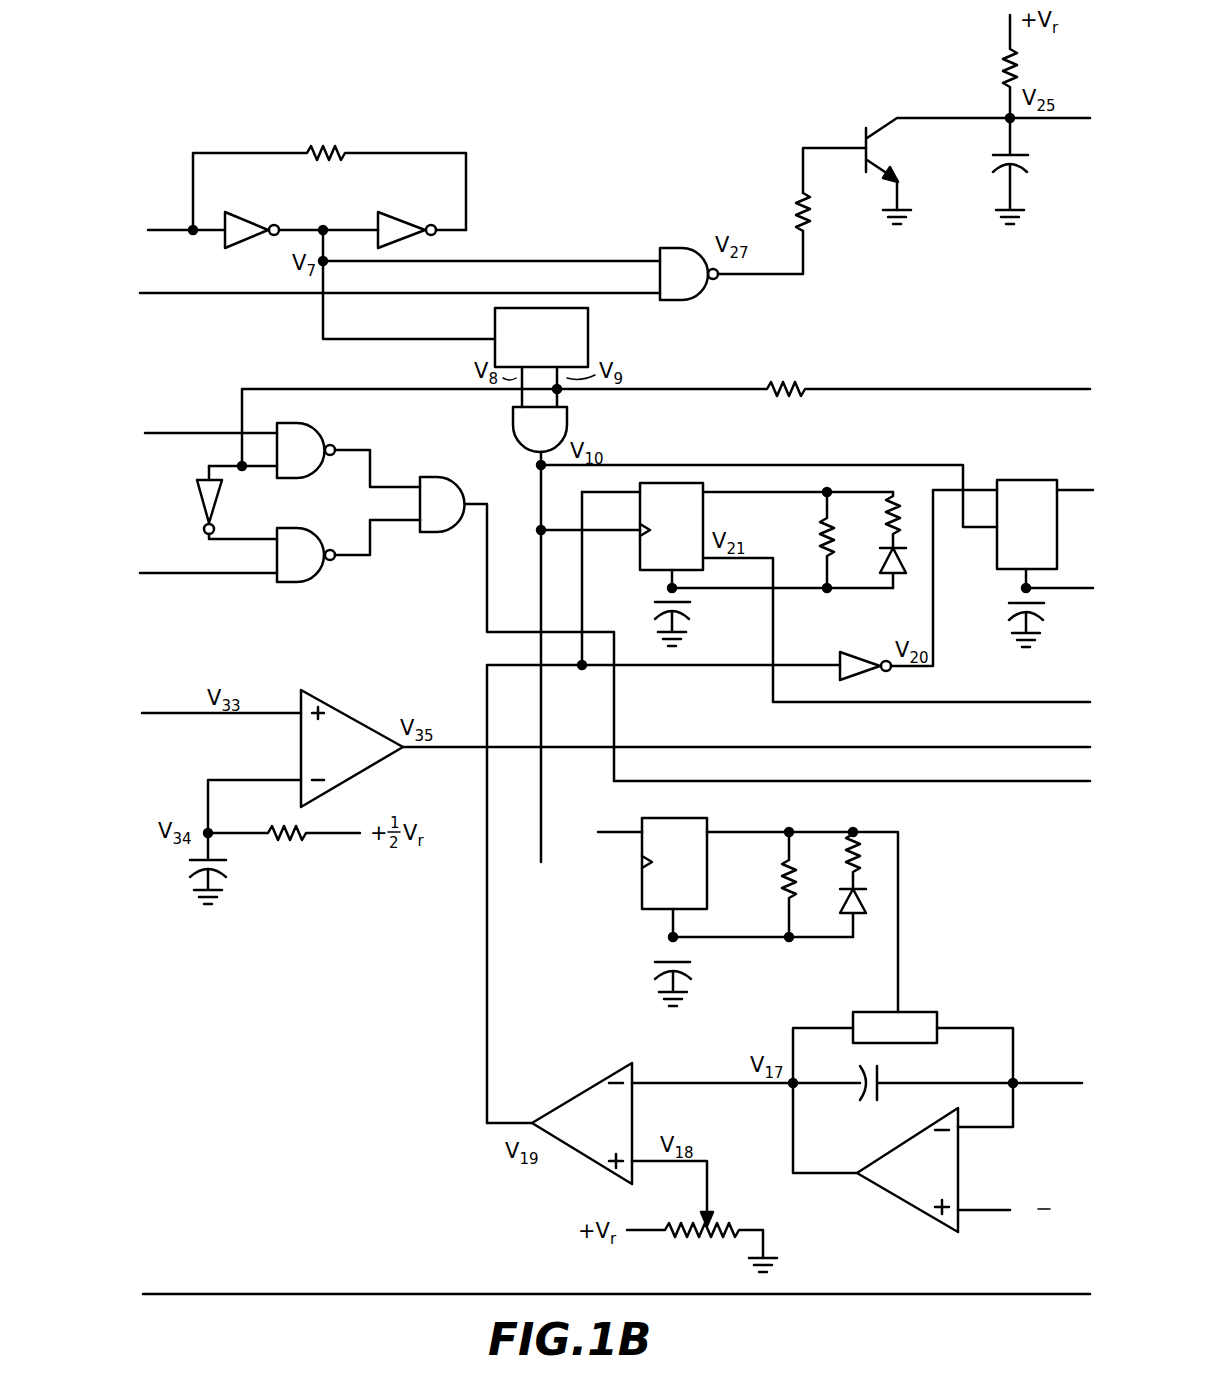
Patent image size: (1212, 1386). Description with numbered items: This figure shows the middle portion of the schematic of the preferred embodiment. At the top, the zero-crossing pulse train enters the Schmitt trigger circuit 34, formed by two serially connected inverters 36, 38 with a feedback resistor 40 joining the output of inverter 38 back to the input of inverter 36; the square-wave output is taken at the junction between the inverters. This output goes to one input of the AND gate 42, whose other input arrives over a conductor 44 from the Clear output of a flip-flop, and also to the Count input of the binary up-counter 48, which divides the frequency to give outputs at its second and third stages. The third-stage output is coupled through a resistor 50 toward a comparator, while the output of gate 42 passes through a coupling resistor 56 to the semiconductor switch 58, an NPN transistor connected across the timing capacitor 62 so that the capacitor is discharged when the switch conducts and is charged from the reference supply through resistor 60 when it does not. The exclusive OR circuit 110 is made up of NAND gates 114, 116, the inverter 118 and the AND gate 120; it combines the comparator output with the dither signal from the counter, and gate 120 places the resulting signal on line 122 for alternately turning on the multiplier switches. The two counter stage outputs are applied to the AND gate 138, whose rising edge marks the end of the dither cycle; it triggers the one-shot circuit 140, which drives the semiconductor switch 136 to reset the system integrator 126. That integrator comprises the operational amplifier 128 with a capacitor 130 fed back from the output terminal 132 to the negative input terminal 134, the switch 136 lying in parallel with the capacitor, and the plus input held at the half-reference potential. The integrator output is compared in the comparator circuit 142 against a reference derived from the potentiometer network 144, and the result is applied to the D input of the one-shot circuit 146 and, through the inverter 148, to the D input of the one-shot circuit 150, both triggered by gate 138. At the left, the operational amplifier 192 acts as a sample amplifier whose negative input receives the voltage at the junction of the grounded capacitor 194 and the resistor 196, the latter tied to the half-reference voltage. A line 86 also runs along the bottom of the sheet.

The Schmitt trigger circuit 34 is at (333, 200).
The inverter 36 is at (241, 218).
The inverter 38 is at (401, 218).
The feedback resistor 40 is at (330, 150).
The AND gate 42 is at (672, 248).
The conductor 44 is at (215, 294).
The binary up-counter 48 is at (588, 334).
The resistor 50 is at (790, 385).
The coupling resistor 56 is at (796, 205).
The semiconductor switch 58 is at (858, 124).
The resistor 60 is at (1004, 68).
The capacitor 62 is at (1028, 164).
The line 86 is at (270, 1292).
The exclusive OR circuit 110 is at (183, 545).
The NAND gate 114 is at (311, 428).
The NAND gate 116 is at (303, 583).
The inverter 118 is at (196, 497).
The AND gate 120 is at (455, 478).
The line 122 is at (1034, 783).
The system integrator 126 is at (852, 1153).
The operational amplifier 128 is at (893, 1204).
The capacitor 130 is at (881, 1078).
The output terminal 132 is at (786, 1090).
The negative input terminal 134 is at (1016, 1080).
The semiconductor switch 136 is at (912, 1010).
The AND gate 138 is at (570, 433).
The one-shot circuit 140 is at (698, 818).
The comparator circuit 142 is at (568, 1100).
The potentiometer network 144 is at (715, 1226).
The one-shot circuit 146 is at (638, 575).
The inverter 148 is at (845, 652).
The one-shot circuit 150 is at (1021, 478).
The operational amplifier 192 is at (345, 710).
The grounded capacitor 194 is at (226, 875).
The resistor 196 is at (294, 845).